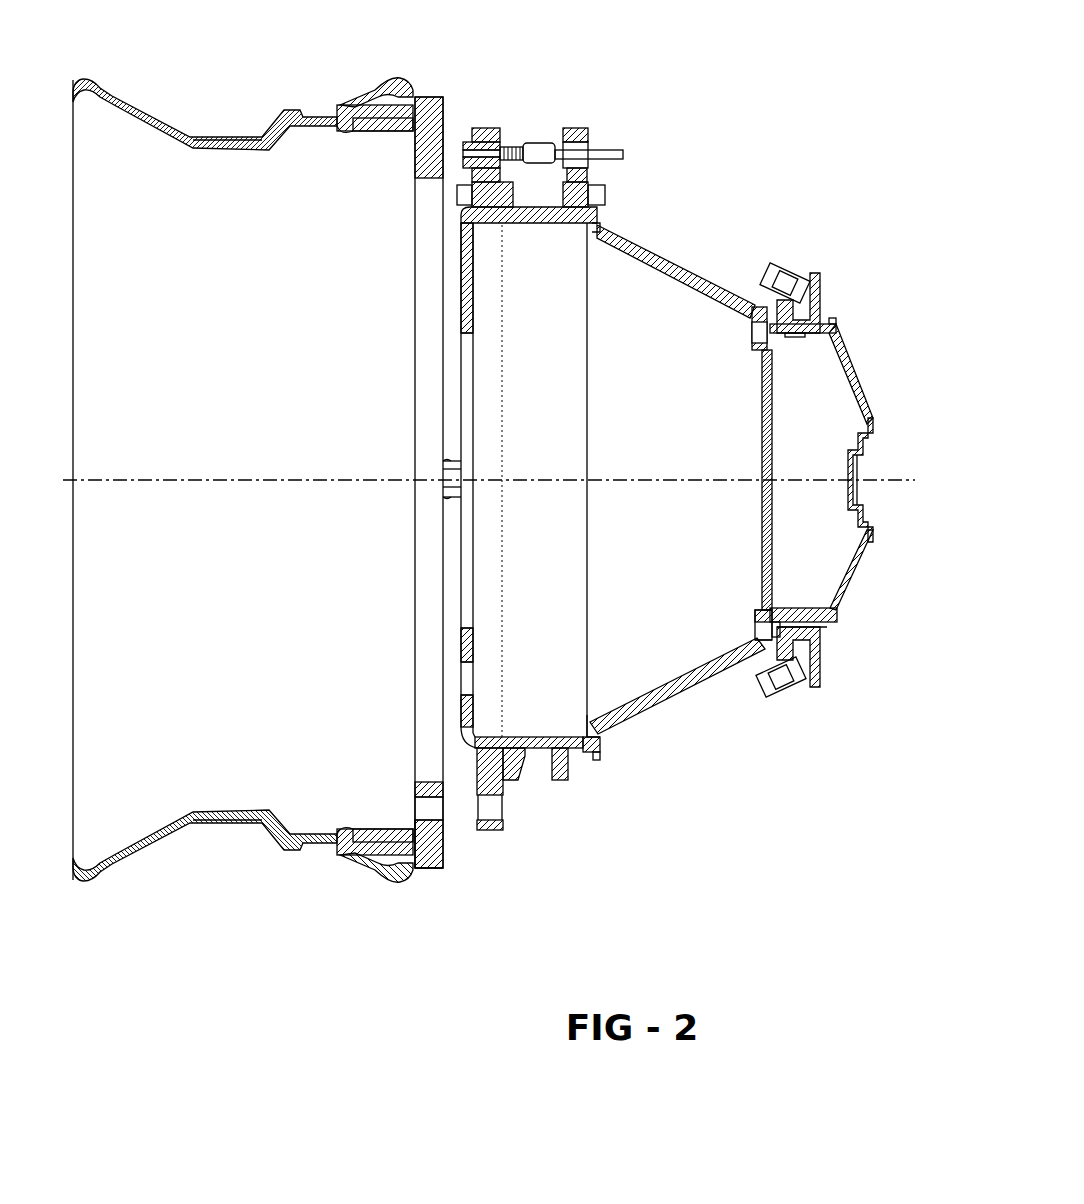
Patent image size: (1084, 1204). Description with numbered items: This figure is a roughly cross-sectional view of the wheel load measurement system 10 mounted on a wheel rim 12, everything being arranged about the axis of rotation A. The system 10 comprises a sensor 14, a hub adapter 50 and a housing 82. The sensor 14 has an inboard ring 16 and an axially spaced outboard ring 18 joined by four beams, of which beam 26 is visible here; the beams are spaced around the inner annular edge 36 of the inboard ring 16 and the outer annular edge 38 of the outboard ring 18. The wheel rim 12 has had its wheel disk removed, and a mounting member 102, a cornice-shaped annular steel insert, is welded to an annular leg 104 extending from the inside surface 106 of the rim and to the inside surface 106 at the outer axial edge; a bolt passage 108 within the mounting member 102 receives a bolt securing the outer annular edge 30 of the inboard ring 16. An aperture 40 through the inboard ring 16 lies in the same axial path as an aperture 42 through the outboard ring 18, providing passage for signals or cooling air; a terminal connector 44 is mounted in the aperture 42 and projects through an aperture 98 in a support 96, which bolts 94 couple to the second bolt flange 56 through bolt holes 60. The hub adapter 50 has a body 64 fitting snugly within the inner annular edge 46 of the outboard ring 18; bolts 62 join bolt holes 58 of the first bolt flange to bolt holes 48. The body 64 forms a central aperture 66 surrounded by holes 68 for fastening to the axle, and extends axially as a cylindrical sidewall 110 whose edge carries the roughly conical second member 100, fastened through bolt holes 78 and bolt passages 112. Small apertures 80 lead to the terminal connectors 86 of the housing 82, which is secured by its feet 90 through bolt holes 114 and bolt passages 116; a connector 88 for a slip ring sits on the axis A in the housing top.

The wheel load measurement system 10 is at (601, 890).
The wheel rim 12 is at (188, 128).
The sensor 14 is at (458, 90).
The inboard ring 16 is at (428, 96).
The outboard ring 18 is at (492, 127).
The beam 26 is at (445, 468).
The outer annular edge 30 is at (433, 872).
The inner annular edge 36 is at (438, 783).
The outer annular edge 38 is at (493, 830).
The aperture 40 is at (436, 812).
The aperture 42 is at (478, 128).
The terminal connector 44 is at (613, 150).
The inner annular edge 46 is at (470, 738).
The bolt holes 48 is at (487, 224).
The hub adapter 50 is at (699, 180).
The second bolt flange 56 is at (520, 771).
The bolt holes 58 is at (517, 221).
The bolt holes 60 is at (544, 224).
The bolts 62 is at (455, 194).
The body 64 is at (476, 707).
The central aperture 66 is at (464, 549).
The holes 68 is at (474, 675).
The bolt holes 78 is at (601, 750).
The small apertures 80 is at (693, 272).
The housing 82 is at (850, 374).
The terminal connectors 86 is at (778, 268).
The connector 88 is at (853, 497).
The feet 90 is at (772, 648).
The bolts 94 is at (604, 194).
The support 96 is at (590, 177).
The aperture 98 is at (555, 127).
The second member 100 is at (657, 705).
The mounting member 102 is at (363, 123).
The annular leg 104 is at (338, 110).
The inside surface 106 is at (228, 143).
The bolt passage 108 is at (388, 110).
The cylindrical sidewall 110 is at (531, 223).
The bolt passages 112 is at (593, 753).
The bolt hole 114 is at (775, 607).
The bolt passages 116 is at (758, 623).
The axis of rotation A is at (172, 477).